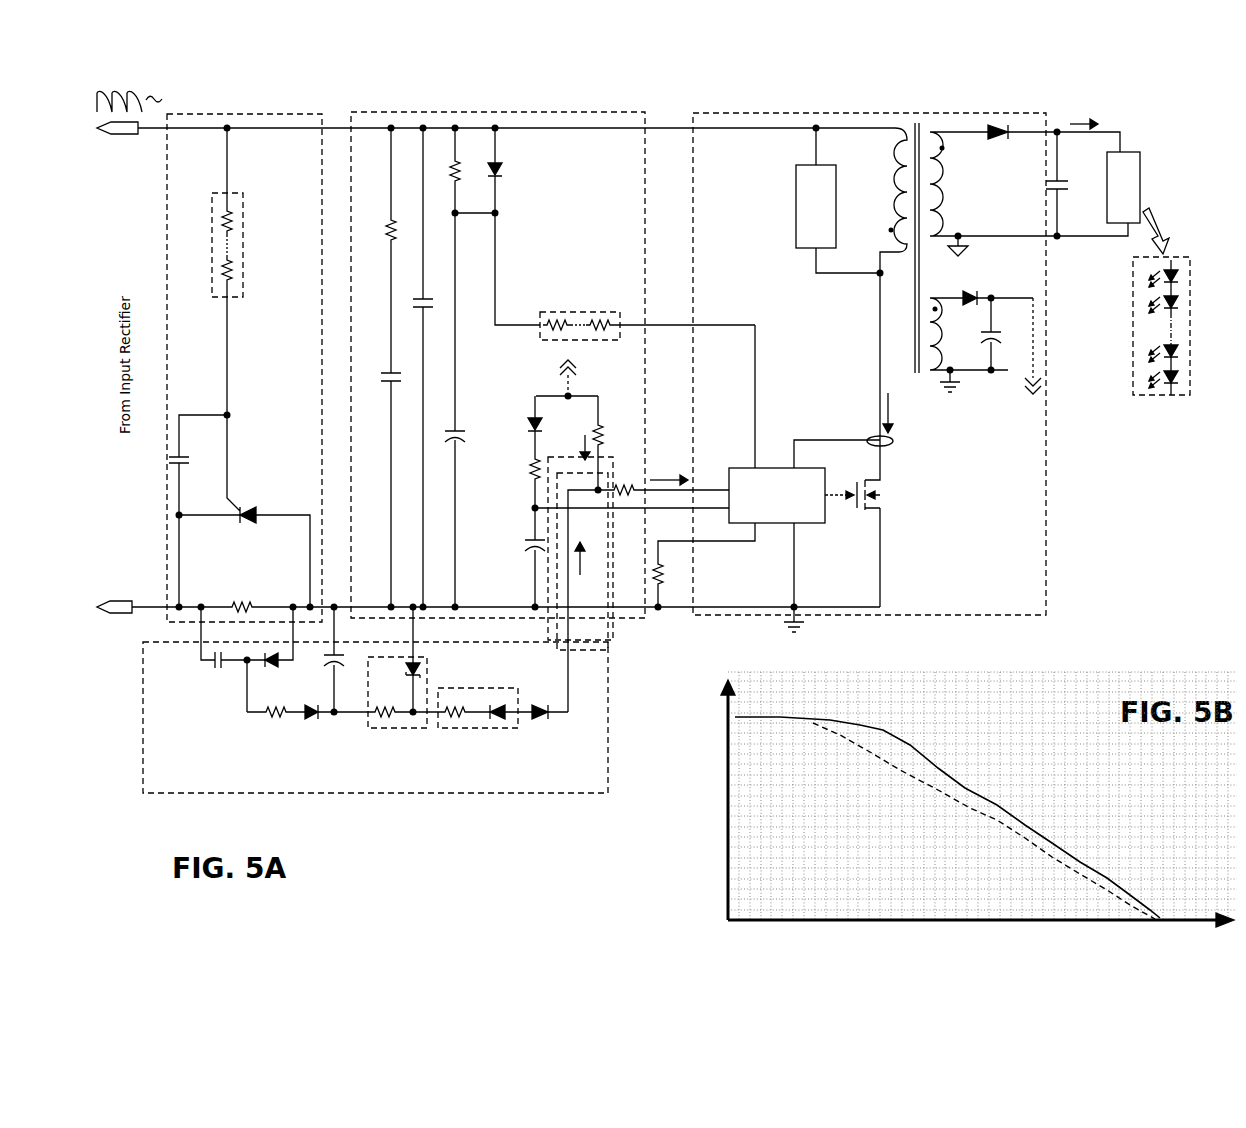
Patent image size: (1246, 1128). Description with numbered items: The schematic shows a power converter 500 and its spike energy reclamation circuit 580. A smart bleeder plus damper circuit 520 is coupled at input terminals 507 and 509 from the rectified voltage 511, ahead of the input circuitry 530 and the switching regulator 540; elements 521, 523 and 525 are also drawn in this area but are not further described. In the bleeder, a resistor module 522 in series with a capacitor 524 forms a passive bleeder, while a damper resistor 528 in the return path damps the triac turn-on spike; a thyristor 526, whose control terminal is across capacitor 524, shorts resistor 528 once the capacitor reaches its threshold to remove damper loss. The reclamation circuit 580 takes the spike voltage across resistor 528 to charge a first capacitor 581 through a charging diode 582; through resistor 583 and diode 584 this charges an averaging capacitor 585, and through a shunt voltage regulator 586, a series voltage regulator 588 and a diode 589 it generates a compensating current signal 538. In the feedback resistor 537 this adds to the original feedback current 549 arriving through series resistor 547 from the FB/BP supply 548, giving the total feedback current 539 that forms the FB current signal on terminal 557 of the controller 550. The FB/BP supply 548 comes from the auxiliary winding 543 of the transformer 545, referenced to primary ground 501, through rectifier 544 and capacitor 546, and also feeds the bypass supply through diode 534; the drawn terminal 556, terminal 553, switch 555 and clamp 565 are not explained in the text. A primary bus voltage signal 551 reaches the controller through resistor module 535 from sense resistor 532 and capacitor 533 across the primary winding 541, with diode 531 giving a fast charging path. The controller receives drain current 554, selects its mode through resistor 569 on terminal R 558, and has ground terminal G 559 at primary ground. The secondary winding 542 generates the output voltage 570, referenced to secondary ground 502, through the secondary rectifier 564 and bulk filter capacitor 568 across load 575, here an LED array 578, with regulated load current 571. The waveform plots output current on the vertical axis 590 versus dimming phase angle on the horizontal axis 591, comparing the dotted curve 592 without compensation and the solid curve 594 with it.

In FIG. 5A, the power converter 500 is at (376, 827).
In FIG. 5A, the primary ground 501 is at (774, 632).
In FIG. 5A, the secondary isolated ground 502 is at (976, 253).
In FIG. 5A, the input terminal 507 is at (125, 155).
In FIG. 5A, the input terminal 509 is at (110, 604).
In FIG. 5A, the rectified voltage VRECT 511 is at (145, 96).
In FIG. 5A, the smart bleeder plus damper circuit 520 is at (226, 110).
In FIG. 5A, the resistor 521 is at (385, 228).
In FIG. 5A, the resistor module 522 is at (243, 240).
In FIG. 5A, the capacitor 523 is at (388, 365).
In FIG. 5A, the capacitor 524 is at (192, 462).
In FIG. 5A, the capacitor 525 is at (432, 291).
In FIG. 5A, the thyristor 526 is at (252, 503).
In FIG. 5A, the damper resistor 528 is at (250, 596).
In FIG. 5A, the input circuitry 530 is at (428, 110).
In FIG. 5A, the diode 531 is at (507, 175).
In FIG. 5A, the resistor 532 is at (466, 176).
In FIG. 5A, the capacitor 533 is at (470, 450).
In FIG. 5A, the diode 534 is at (524, 416).
In FIG. 5A, the resistor module 535 is at (580, 310).
In FIG. 5A, the feedback resistor 537 is at (630, 480).
In FIG. 5A, the feedback compensating current signal 538 is at (588, 552).
In FIG. 5A, the total feedback current signal 539 is at (665, 465).
In FIG. 5A, the switching regulator 540 is at (746, 110).
In FIG. 5A, the primary winding 541 is at (888, 198).
In FIG. 5A, the secondary winding 542 is at (944, 202).
In FIG. 5A, the auxiliary winding 543 is at (938, 338).
In FIG. 5A, the rectifier 544 is at (966, 288).
In FIG. 5A, the transformer T1 545 is at (905, 120).
In FIG. 5A, the capacitor 546 is at (1015, 340).
In FIG. 5A, the series resistor 547 is at (605, 440).
In FIG. 5A, the FB/BP supply 548 is at (556, 366).
In FIG. 5A, the original feedback current signal 549 is at (581, 438).
In FIG. 5A, the controller 550 is at (782, 460).
In FIG. 5A, the primary bus voltage signal 551 is at (743, 460).
In FIG. 5A, the current sense terminal 553 is at (817, 438).
In FIG. 5A, the drain current 554 is at (896, 420).
In FIG. 5A, the switch SW 555 is at (894, 500).
In FIG. 5A, the BP terminal 556 is at (708, 515).
In FIG. 5A, the FB terminal 557 is at (708, 480).
In FIG. 5A, the terminal R 558 is at (766, 540).
In FIG. 5A, the ground terminal G 559 is at (804, 545).
In FIG. 5A, the secondary rectifier D1 564 is at (1010, 114).
In FIG. 5A, the clamp 565 is at (794, 208).
In FIG. 5A, the bulk filter capacitor 568 is at (1070, 192).
In FIG. 5A, the resistor 569 is at (664, 572).
In FIG. 5A, the output voltage Vo 570 is at (1144, 124).
In FIG. 5A, the load current Io 571 is at (1088, 120).
In FIG. 5A, the load 575 is at (1148, 194).
In FIG. 5A, the LED array 578 is at (1162, 400).
In FIG. 5A, the spike energy reclamation circuit 580 is at (205, 795).
In FIG. 5A, the capacitor C1 581 is at (212, 693).
In FIG. 5A, the diode Dch 582 is at (283, 670).
In FIG. 5A, the resistor 583 is at (272, 728).
In FIG. 5A, the diode 584 is at (306, 728).
In FIG. 5A, the averaging capacitor C2 585 is at (338, 660).
In FIG. 5A, the shunt voltage regulator 586 is at (378, 733).
In FIG. 5A, the series voltage regulator 588 is at (456, 730).
In FIG. 5A, the diode 589 is at (542, 726).
In FIG. 5B, the vertical axis 590 is at (654, 828).
In FIG. 5B, the horizontal axis 591 is at (1178, 908).
In FIG. 5B, the dotted line curve 592 is at (872, 754).
In FIG. 5B, the solid line curve 594 is at (880, 730).